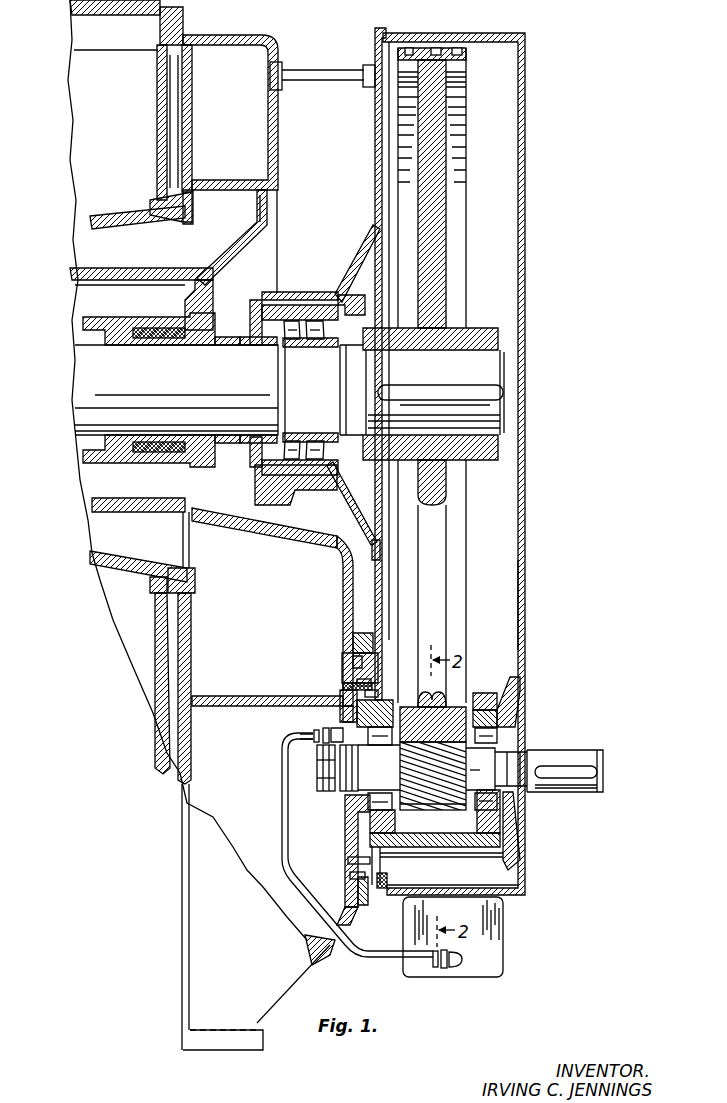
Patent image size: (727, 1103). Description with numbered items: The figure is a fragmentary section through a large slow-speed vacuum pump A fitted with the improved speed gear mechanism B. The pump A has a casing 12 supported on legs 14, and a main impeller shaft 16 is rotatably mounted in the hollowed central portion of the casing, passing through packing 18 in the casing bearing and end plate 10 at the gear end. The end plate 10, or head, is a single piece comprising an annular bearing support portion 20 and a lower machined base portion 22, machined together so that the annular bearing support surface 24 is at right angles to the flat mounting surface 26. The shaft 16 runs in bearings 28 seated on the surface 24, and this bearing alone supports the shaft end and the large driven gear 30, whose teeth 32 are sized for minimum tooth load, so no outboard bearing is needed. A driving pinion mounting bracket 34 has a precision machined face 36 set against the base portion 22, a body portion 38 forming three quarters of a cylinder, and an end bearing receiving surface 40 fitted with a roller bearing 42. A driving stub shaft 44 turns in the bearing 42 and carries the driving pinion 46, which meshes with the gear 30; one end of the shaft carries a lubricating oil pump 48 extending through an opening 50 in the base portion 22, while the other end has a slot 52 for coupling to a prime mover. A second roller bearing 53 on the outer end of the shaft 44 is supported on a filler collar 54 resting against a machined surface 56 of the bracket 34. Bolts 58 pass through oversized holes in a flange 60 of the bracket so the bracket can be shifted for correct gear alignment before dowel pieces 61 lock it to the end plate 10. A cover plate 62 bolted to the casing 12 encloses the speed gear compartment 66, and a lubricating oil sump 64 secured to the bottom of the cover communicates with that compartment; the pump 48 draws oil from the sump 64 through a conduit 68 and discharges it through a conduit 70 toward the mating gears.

The casing bearing and end plate 10 is at (337, 545).
The casing 12 is at (80, 10).
The legs 14 is at (226, 1040).
The main impeller shaft 16 is at (82, 413).
The packing 18 is at (165, 333).
The annular bearing support portion 20 is at (310, 480).
The machined base portion 22 is at (343, 686).
The annular bearing support surface 24 is at (345, 458).
The flat mounting surface 26 is at (343, 655).
The bearings 28 is at (308, 343).
The driven gear 30 is at (430, 583).
The teeth 32 is at (465, 50).
The driving pinion mounting bracket 34 is at (470, 850).
The precision machined face 36 is at (358, 662).
The body portion 38 is at (406, 849).
The end bearing receiving surface 40 is at (345, 836).
The roller bearing 42 is at (378, 714).
The driving stub shaft 44 is at (566, 790).
The driving pinion 46 is at (445, 735).
The lubricating oil pump 48 is at (318, 770).
The opening 50 is at (345, 800).
The slot 52 is at (568, 770).
The roller bearing 53 is at (498, 722).
The filler collar 54 is at (508, 700).
The machined surface 56 is at (500, 832).
The bolts 58 is at (372, 693).
The flange 60 is at (365, 683).
The dowel pieces 61 is at (348, 860).
The cover plate 62 is at (525, 552).
The lubricating oil sump 64 is at (476, 972).
The speed gear compartment 66 is at (505, 607).
The conduit 68 is at (367, 956).
The conduit 70 is at (340, 732).
The vacuum pump A is at (281, 53).
The speed gear mechanism B is at (475, 464).